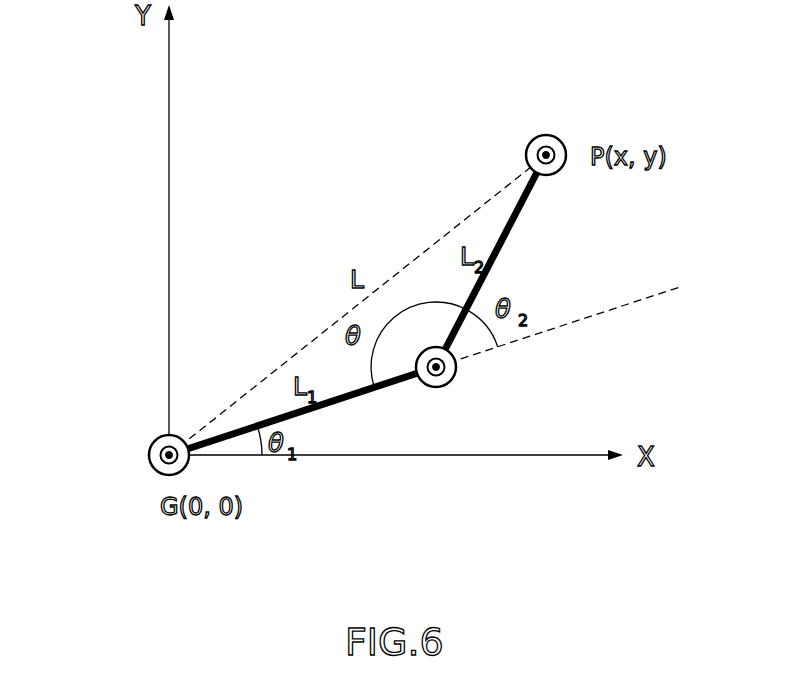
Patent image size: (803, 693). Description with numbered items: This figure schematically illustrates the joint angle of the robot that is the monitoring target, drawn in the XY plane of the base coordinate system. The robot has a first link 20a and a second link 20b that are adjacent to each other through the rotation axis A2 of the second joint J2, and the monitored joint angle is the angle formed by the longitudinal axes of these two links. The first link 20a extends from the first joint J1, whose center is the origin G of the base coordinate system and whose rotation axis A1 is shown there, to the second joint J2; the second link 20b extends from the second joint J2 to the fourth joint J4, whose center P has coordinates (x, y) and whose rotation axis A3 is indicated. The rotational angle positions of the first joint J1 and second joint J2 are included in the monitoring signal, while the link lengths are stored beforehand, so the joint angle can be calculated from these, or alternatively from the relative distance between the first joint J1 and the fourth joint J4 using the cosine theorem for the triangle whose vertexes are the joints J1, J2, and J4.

The first link 20a is at (305, 415).
The second link 20b is at (505, 243).
The first joint J1 is at (149, 454).
The second joint J2 is at (450, 382).
The fourth joint J4 is at (546, 135).
The rotation axis A1 is at (160, 463).
The rotation axis A2 is at (438, 367).
The rotation axis A3 is at (544, 154).